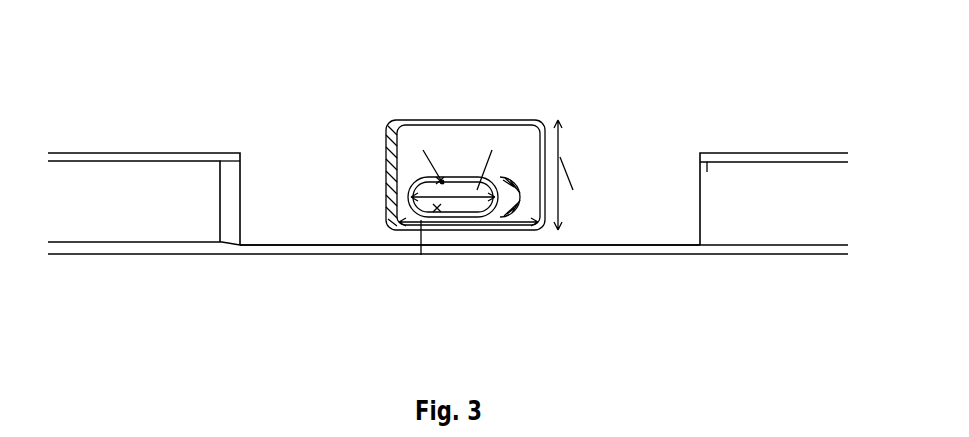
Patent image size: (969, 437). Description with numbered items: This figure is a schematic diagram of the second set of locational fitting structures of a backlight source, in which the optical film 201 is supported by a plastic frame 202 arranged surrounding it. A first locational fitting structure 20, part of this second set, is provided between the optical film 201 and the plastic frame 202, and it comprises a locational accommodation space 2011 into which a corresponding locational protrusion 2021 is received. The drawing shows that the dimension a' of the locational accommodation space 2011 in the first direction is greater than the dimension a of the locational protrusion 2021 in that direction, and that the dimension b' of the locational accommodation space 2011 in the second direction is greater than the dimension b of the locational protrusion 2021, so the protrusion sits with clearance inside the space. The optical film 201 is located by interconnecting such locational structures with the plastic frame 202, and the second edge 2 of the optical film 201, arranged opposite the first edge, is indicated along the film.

The second edge 2 is at (493, 252).
The first locational fitting structure 20 is at (353, 117).
The optical film 201 is at (627, 170).
The plastic frame 202 is at (167, 175).
The locational accommodation space 2011 is at (385, 170).
The locational protrusion 2021 is at (453, 190).